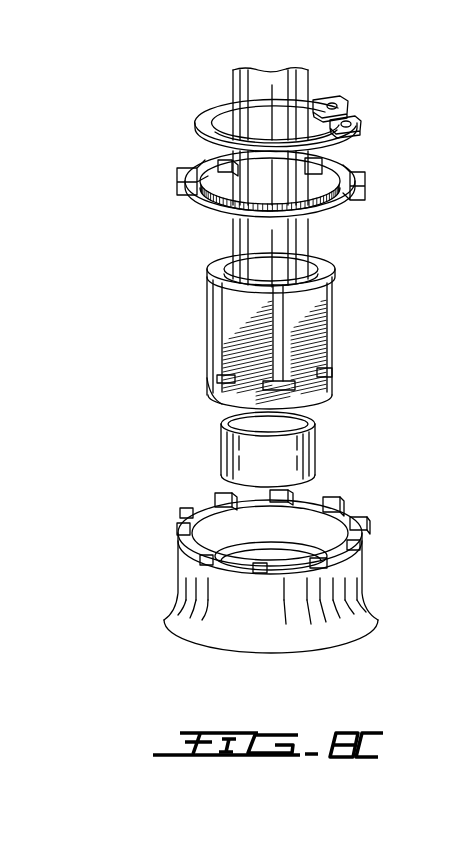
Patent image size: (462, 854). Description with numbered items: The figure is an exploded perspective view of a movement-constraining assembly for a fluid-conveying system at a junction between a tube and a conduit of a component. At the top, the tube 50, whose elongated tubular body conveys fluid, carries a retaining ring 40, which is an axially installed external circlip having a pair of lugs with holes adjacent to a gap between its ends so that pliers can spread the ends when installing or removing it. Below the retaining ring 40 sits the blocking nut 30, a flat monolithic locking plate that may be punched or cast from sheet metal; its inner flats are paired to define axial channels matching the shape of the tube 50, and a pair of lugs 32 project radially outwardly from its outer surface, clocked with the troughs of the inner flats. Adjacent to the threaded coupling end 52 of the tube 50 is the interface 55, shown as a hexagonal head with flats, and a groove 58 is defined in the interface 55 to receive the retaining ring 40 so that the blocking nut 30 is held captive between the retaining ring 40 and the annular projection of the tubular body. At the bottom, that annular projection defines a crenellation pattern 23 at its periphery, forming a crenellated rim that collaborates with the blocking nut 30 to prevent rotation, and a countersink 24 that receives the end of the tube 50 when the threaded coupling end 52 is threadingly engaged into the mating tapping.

The crenellation pattern 23 is at (180, 518).
The countersink 24 is at (219, 552).
The blocking nut 30 is at (288, 167).
The lugs 32 is at (363, 177).
The retaining ring 40 is at (320, 100).
The tube 50 is at (300, 243).
The threaded coupling end 52 is at (228, 451).
The interface 55 is at (263, 331).
The groove 58 is at (231, 384).